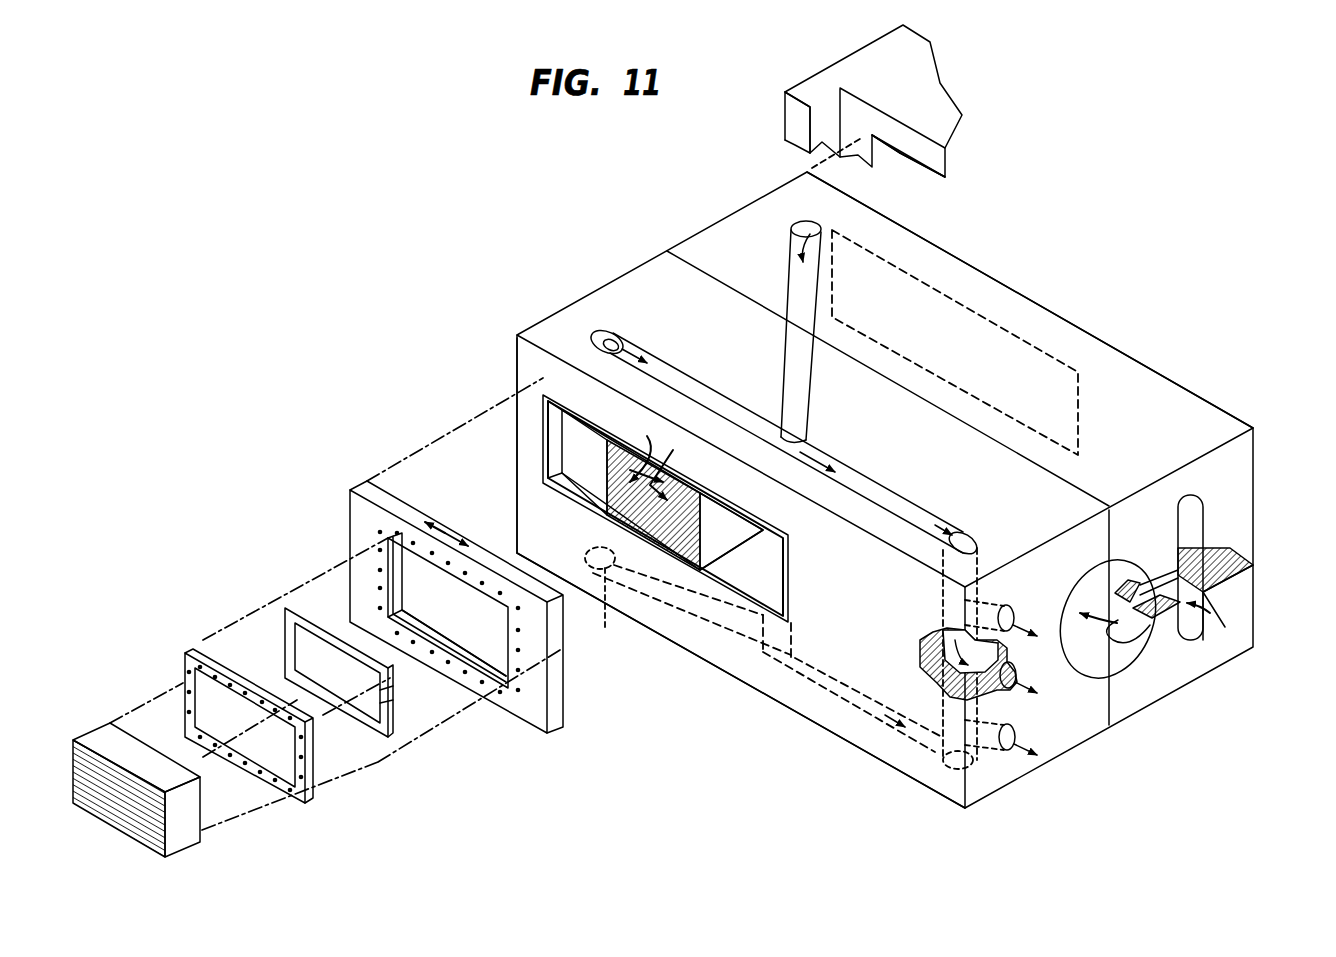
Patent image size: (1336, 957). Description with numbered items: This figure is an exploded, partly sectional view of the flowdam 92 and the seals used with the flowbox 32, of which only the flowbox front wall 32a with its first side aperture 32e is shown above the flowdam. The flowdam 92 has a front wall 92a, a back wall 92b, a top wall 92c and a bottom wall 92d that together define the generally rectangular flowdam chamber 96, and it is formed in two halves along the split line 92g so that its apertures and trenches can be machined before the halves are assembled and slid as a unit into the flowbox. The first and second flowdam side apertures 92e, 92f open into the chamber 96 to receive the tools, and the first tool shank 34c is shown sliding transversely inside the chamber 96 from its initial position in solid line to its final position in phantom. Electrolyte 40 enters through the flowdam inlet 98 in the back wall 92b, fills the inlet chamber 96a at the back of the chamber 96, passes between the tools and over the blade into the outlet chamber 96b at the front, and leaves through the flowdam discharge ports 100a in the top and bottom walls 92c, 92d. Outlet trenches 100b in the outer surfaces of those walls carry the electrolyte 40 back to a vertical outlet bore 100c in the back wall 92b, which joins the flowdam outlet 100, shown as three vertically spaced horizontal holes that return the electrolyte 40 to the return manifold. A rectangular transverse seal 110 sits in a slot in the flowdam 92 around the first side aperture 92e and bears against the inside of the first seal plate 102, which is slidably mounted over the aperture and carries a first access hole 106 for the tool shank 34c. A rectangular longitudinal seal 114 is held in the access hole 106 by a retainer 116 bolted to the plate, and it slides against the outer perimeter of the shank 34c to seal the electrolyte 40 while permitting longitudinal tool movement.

The flowbox 32 is at (940, 86).
The flowbox front wall 32a is at (808, 88).
The flowbox first side aperture 32e is at (918, 165).
The first tool shank 34c is at (82, 702).
The electrolyte 40 is at (1217, 620).
The flowdam 92 is at (1128, 345).
The flowdam front wall 92a is at (517, 360).
The flowdam back wall 92b is at (1178, 680).
The flowdam top wall 92c is at (1050, 325).
The flowdam bottom wall 92d is at (885, 770).
The flowdam first side aperture 92e is at (555, 430).
The flowdam second side aperture 92f is at (985, 305).
The split line 92g is at (1090, 497).
The flowdam chamber 96 is at (737, 568).
The inlet chamber 96a is at (741, 532).
The outlet chamber 96b is at (584, 462).
The flowdam inlet 98 is at (1195, 522).
The flowdam outlet 100 is at (1020, 690).
The flowdam discharge ports 100a is at (600, 335).
The outlet trenches 100b is at (810, 410).
The vertical outlet bore 100c is at (972, 535).
The first seal plate 102 is at (447, 533).
The first access hole 106 is at (478, 662).
The transverse seal 110 is at (790, 570).
The longitudinal seal 114 is at (290, 610).
The retainer 116 is at (190, 652).